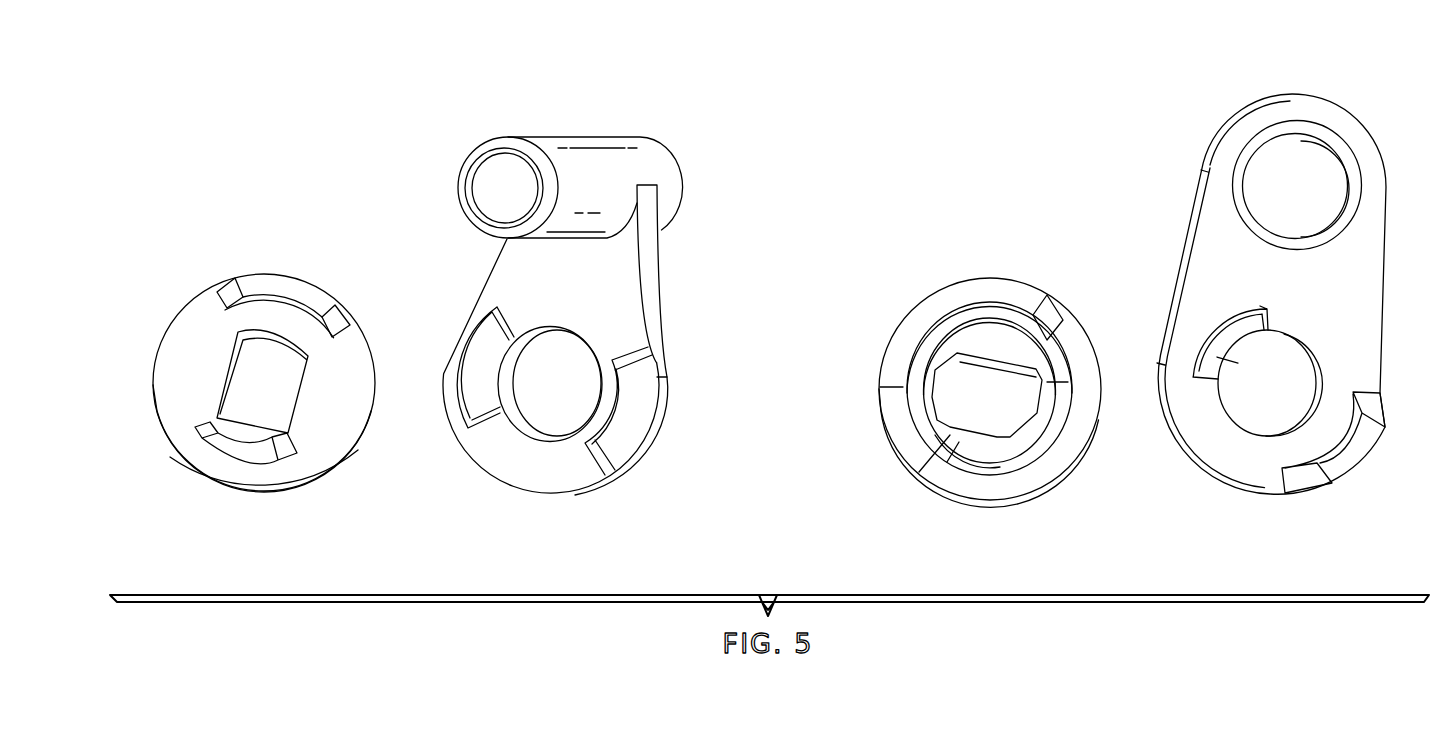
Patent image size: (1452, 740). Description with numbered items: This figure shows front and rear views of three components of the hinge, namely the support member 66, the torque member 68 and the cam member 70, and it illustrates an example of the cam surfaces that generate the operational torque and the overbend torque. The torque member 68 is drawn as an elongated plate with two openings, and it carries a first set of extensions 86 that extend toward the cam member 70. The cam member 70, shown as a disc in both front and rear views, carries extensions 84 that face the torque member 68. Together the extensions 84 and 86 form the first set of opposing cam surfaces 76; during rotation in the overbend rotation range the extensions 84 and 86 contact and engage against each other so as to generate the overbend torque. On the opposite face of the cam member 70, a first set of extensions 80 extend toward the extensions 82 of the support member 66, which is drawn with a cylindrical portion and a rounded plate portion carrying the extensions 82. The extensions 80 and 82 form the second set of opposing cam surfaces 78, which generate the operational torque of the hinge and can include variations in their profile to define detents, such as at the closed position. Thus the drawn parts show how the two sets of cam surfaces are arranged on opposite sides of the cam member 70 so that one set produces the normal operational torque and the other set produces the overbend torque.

The support member 66 is at (568, 137).
The torque member 68 is at (1302, 264).
The cam member 70 is at (152, 375).
The first set of opposing cam surfaces 76 is at (1022, 382).
The second set of opposing cam surfaces 78 is at (297, 410).
The first set of extensions 80 is at (243, 443).
The extensions 82 is at (640, 397).
The extensions 84 is at (1003, 289).
The first set of extensions 86 is at (1372, 410).